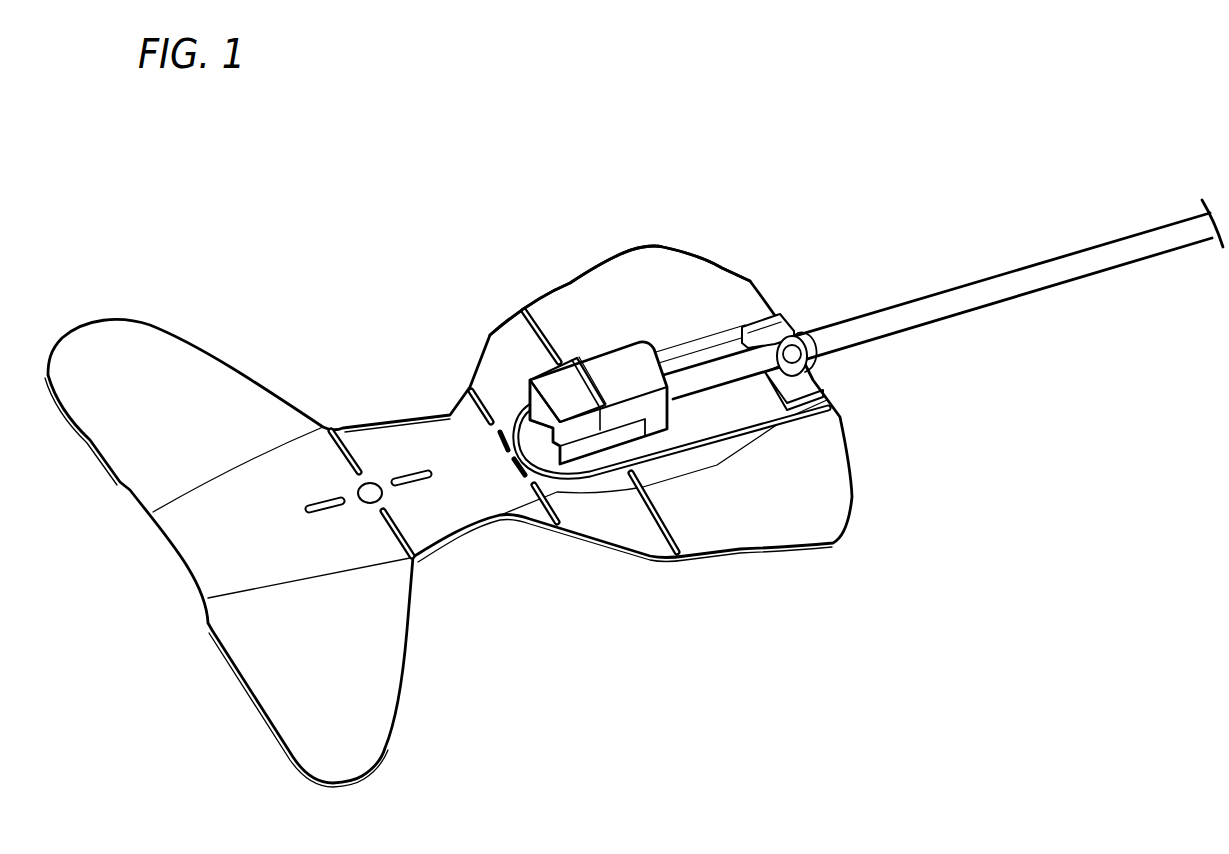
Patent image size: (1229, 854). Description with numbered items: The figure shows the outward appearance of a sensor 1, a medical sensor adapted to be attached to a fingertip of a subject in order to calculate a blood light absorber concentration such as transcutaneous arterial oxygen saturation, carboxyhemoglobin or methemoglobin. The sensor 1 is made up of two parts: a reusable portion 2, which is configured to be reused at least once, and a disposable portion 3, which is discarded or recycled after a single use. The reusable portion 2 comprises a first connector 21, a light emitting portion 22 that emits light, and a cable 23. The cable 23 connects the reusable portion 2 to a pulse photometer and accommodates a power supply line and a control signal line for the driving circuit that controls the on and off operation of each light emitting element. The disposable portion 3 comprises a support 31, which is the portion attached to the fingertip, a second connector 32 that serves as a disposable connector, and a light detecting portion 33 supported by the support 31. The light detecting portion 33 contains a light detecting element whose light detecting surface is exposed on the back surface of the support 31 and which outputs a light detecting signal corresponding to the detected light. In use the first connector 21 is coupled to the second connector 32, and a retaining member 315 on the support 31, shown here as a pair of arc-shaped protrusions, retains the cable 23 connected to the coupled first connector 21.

The sensor 1 is at (667, 110).
The reusable portion 2 is at (893, 224).
The first connector 21 is at (630, 360).
The light emitting portion 22 is at (603, 445).
The cable 23 is at (1000, 280).
The disposable portion 3 is at (342, 321).
The support 31 is at (568, 296).
The second connector 32 is at (553, 382).
The light detecting portion 33 is at (367, 481).
The retaining member 315 is at (808, 382).